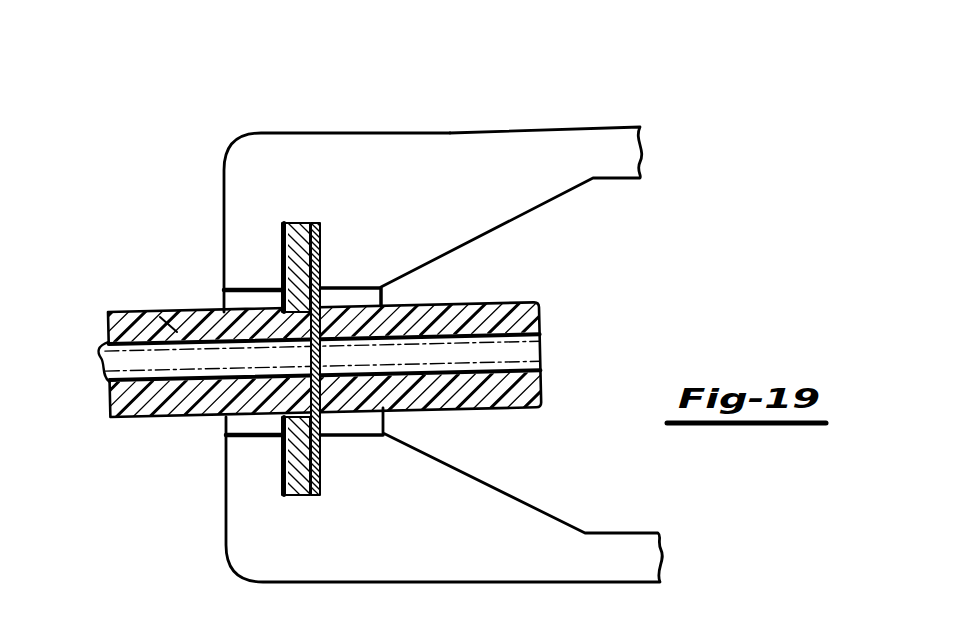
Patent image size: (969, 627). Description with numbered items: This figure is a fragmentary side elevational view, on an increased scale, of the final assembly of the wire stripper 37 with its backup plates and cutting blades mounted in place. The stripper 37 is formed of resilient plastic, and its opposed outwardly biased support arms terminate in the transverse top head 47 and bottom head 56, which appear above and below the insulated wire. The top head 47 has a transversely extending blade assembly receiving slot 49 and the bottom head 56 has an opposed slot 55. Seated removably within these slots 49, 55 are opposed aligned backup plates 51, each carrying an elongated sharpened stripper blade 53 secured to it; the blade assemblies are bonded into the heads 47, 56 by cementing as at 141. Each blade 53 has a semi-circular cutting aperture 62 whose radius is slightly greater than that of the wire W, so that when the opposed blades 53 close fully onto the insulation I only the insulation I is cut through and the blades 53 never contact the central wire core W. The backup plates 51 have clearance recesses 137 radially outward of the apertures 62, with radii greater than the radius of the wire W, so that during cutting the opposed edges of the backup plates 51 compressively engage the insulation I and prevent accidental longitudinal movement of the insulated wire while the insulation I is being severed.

The wire stripper 37 is at (590, 123).
The top head 47 is at (238, 177).
The blade assembly receiving slot 49 is at (282, 237).
The backup plate 51 is at (282, 267).
The stripper blade 53 is at (322, 247).
The blade assembly receiving slot 55 is at (283, 472).
The bottom head 56 is at (258, 557).
The cutting aperture 62 is at (345, 382).
The clearance recess 137 is at (160, 317).
The cement bond 141 is at (283, 448).
The insulation I is at (511, 302).
The wire W is at (512, 350).